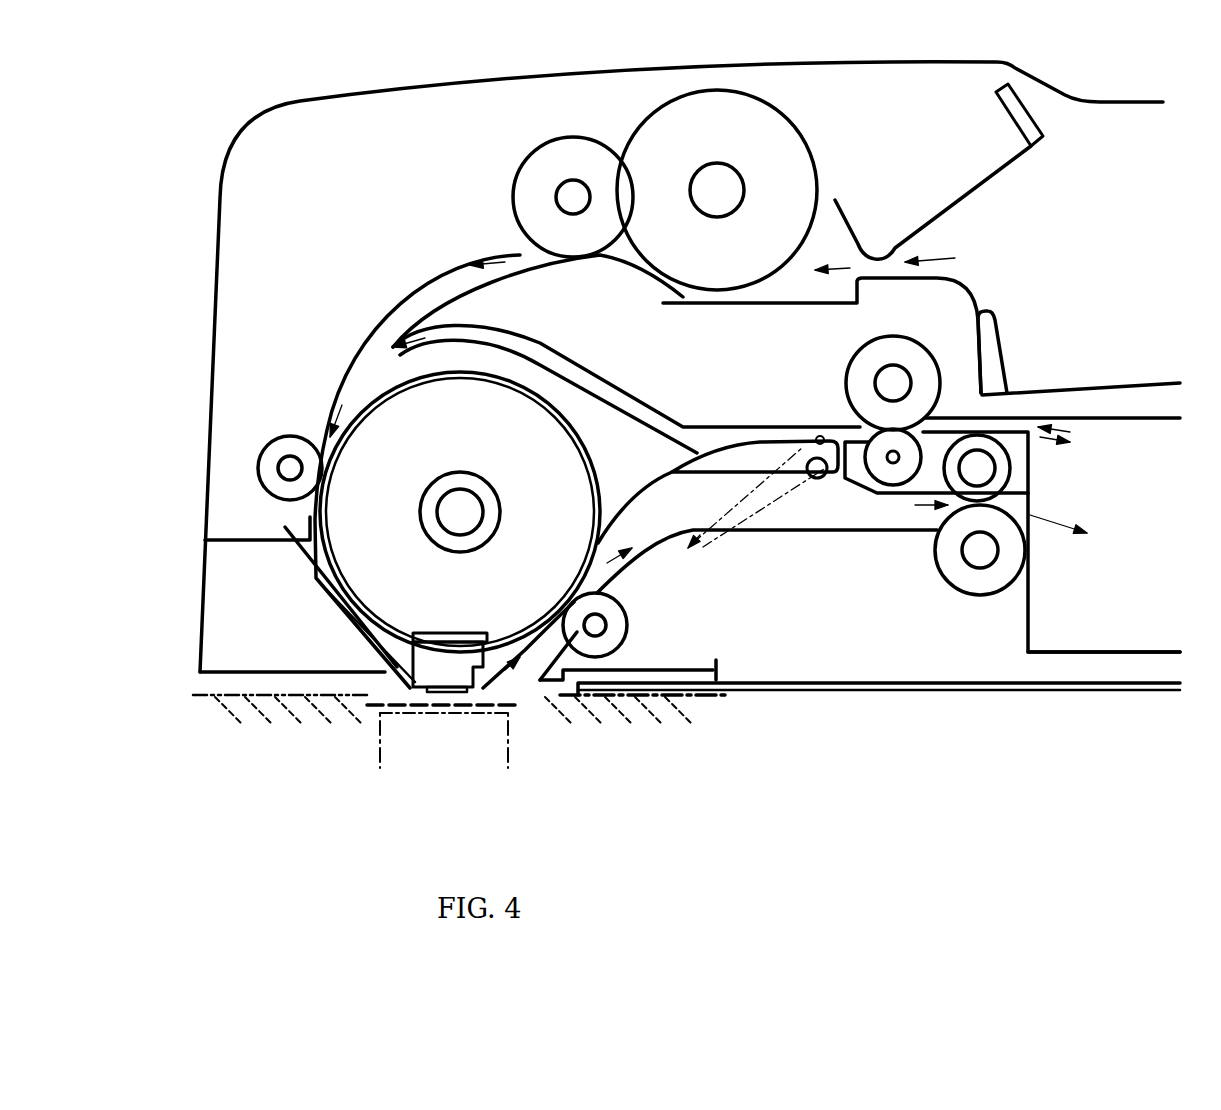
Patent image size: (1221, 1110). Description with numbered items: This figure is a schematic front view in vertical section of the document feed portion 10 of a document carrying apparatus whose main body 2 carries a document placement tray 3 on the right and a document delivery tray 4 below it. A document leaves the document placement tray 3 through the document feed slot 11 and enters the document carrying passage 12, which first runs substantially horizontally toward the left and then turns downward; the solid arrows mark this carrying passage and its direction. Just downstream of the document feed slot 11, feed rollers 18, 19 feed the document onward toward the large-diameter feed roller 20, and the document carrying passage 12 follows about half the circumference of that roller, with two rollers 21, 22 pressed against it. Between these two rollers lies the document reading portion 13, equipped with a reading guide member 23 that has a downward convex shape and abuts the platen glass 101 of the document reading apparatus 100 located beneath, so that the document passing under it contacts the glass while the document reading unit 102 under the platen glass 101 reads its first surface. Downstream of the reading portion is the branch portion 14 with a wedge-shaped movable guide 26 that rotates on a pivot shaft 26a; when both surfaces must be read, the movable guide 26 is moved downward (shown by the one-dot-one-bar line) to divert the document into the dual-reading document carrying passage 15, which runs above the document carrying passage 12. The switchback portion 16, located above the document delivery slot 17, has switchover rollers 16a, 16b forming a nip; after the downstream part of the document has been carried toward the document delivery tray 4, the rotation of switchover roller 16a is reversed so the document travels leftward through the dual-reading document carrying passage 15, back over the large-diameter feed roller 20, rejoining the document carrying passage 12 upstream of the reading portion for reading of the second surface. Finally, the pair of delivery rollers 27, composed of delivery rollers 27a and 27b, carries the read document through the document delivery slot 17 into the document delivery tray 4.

The document feed portion 10 is at (681, 364).
The document feed slot 11 is at (939, 171).
The document carrying passage 12 is at (420, 282).
The document placement tray 3 is at (1125, 383).
The feed roller 18 is at (800, 135).
The feed roller 19 is at (523, 152).
The dual-reading document carrying passage 15 is at (608, 388).
The large-diameter feed roller 20 is at (489, 512).
The roller 21 is at (290, 436).
The roller 22 is at (628, 630).
The movable guide 26 is at (752, 440).
The pivot shaft 26a is at (818, 480).
The branch portion 14 is at (772, 523).
The switchback portion 16 is at (937, 456).
The switchover roller 16a is at (848, 372).
The switchover roller 16b is at (876, 492).
The pair of delivery rollers 27 is at (996, 554).
The delivery roller 27a is at (965, 597).
The delivery roller 27b is at (1030, 470).
The document delivery slot 17 is at (1032, 532).
The document delivery tray 4 is at (1135, 650).
The reading guide member 23 is at (450, 633).
The document reading portion 13 is at (341, 609).
The main body 2 is at (905, 693).
The document reading apparatus 100 is at (446, 750).
The platen glass 101 is at (520, 707).
The document reading unit 102 is at (380, 752).